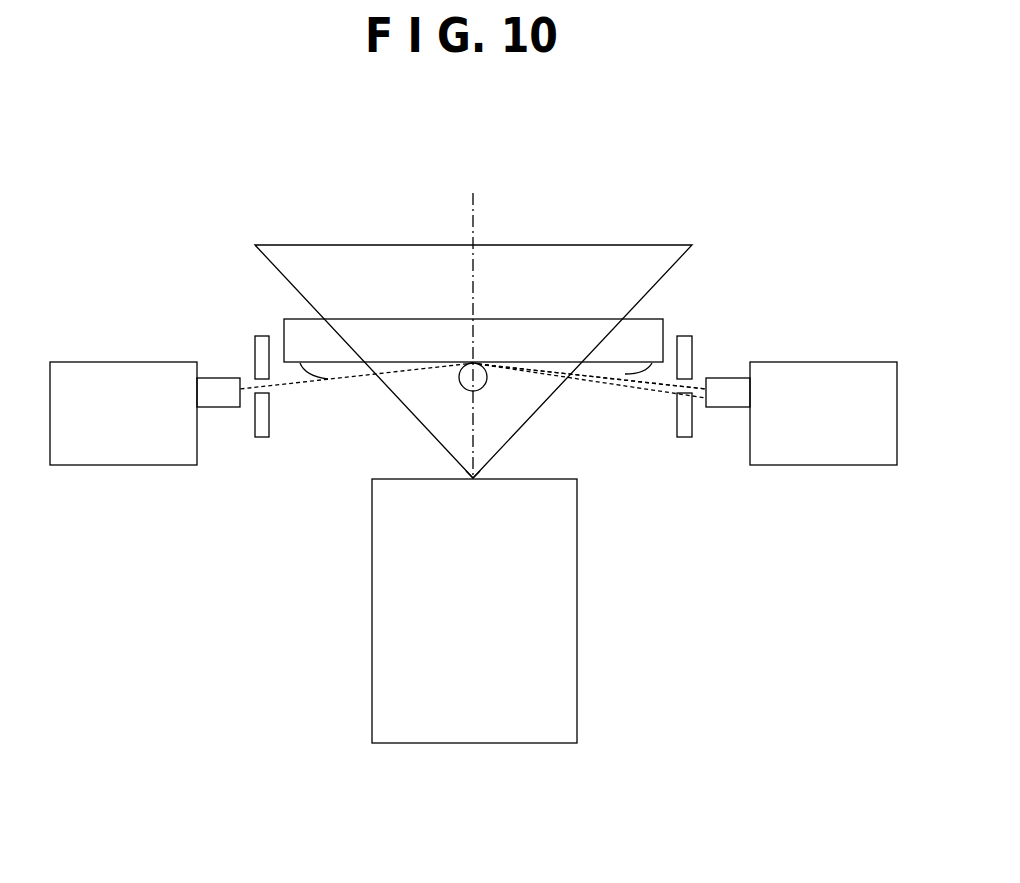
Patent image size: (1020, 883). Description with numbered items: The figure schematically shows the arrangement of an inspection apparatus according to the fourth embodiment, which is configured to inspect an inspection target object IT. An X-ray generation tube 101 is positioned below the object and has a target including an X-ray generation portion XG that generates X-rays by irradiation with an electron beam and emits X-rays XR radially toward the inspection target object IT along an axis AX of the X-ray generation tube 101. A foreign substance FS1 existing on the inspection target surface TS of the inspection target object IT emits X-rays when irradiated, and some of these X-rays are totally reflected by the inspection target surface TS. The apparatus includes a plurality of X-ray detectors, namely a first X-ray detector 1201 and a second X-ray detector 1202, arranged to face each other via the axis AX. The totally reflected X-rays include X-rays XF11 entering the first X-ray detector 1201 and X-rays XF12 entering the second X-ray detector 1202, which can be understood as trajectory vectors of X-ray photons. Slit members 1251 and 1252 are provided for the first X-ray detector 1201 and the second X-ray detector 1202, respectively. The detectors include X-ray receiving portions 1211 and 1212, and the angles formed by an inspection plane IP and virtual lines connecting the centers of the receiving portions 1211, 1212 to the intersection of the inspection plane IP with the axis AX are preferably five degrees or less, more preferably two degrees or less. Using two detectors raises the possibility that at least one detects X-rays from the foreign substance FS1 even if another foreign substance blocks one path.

The X-ray generation tube 101 is at (577, 662).
The first X-ray detector 1201 is at (815, 362).
The second X-ray detector 1202 is at (133, 362).
The X-ray receiving portion 1211 is at (732, 397).
The X-ray receiving portion 1212 is at (215, 397).
The slit member 1251 is at (683, 438).
The slit member 1252 is at (260, 438).
The axis AX is at (475, 230).
The X-rays XR is at (300, 260).
The inspection target object IT is at (573, 335).
The foreign substance FS1 is at (468, 391).
The X-ray generation portion XG is at (478, 477).
The X-rays XF12 is at (293, 385).
The X-rays XF11 is at (643, 393).
The inspection plane IP is at (600, 372).
The inspection target surface TS is at (592, 376).